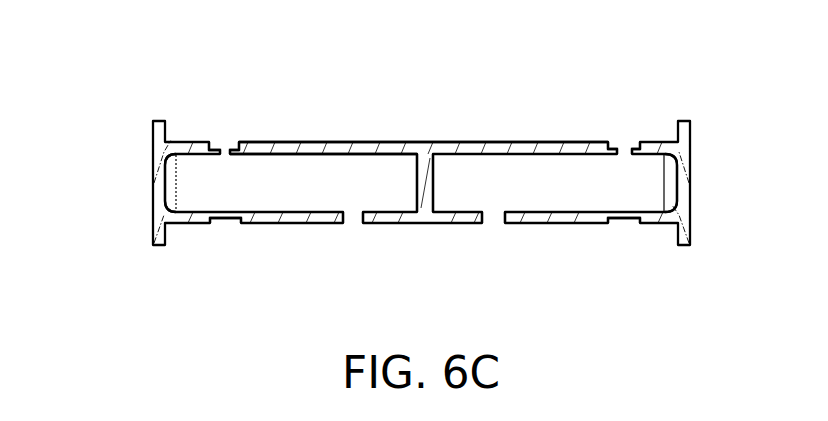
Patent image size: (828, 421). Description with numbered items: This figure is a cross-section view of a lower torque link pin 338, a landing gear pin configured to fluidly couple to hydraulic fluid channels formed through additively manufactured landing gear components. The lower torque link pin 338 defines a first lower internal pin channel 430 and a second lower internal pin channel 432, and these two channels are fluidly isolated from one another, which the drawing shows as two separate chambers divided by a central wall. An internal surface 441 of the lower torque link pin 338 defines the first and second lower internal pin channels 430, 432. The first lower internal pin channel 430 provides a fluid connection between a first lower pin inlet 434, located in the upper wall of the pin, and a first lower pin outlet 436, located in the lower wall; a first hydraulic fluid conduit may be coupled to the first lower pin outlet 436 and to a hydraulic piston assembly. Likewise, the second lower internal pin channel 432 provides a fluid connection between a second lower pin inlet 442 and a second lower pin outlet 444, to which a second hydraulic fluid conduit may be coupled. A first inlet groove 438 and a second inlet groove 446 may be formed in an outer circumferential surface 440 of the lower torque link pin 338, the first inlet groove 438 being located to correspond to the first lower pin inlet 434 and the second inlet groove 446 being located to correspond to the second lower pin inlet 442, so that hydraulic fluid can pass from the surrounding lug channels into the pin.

The lower torque link pin 338 is at (151, 96).
The first lower internal pin channel 430 is at (284, 183).
The second lower internal pin channel 432 is at (536, 183).
The first lower pin inlet 434 is at (221, 146).
The first lower pin outlet 436 is at (349, 231).
The first inlet groove 438 is at (224, 230).
The outer circumferential surface 440 is at (418, 142).
The internal surface 441 is at (370, 160).
The second lower pin inlet 442 is at (622, 146).
The second lower pin outlet 444 is at (494, 231).
The second inlet groove 446 is at (623, 229).